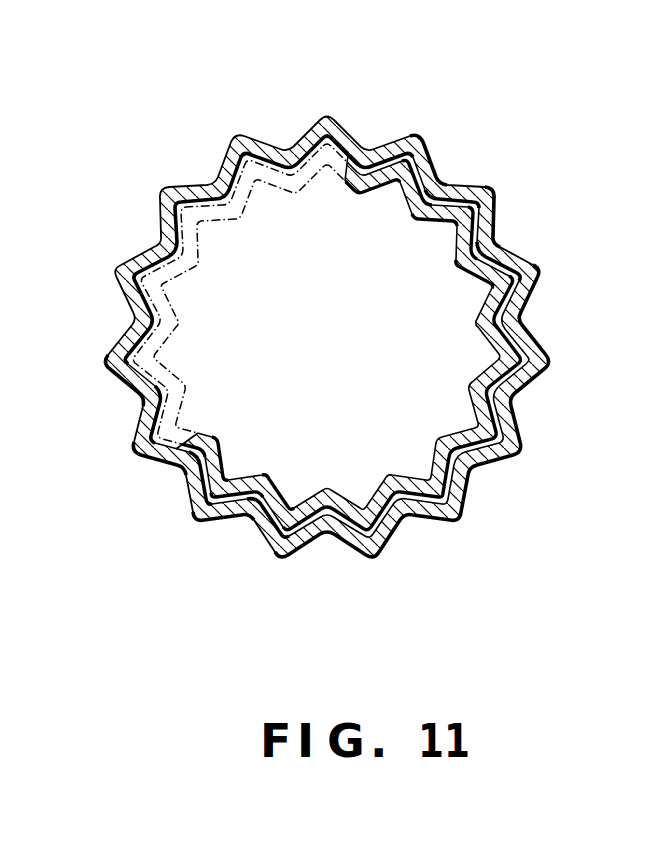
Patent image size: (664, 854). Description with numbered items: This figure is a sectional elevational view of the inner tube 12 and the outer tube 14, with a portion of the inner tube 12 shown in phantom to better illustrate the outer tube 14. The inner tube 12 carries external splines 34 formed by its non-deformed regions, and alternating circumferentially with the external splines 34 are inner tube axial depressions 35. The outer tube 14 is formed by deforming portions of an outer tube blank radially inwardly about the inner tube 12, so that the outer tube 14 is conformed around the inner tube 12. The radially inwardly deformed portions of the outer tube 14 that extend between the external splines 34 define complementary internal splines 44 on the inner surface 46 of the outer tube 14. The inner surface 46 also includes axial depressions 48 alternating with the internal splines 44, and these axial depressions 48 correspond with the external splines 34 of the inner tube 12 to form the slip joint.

The outer tube 14 is at (354, 127).
The external splines 34 is at (545, 366).
The inner tube axial depressions 35 is at (490, 239).
The inner tube 12 is at (474, 335).
The inner surface 46 is at (154, 335).
The axial depressions 48 is at (244, 152).
The internal splines 44 is at (194, 257).